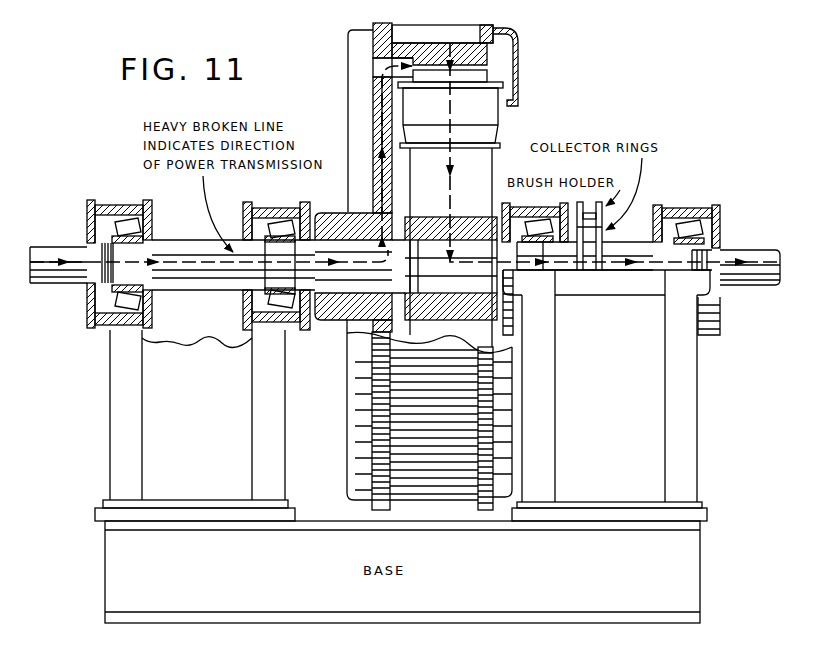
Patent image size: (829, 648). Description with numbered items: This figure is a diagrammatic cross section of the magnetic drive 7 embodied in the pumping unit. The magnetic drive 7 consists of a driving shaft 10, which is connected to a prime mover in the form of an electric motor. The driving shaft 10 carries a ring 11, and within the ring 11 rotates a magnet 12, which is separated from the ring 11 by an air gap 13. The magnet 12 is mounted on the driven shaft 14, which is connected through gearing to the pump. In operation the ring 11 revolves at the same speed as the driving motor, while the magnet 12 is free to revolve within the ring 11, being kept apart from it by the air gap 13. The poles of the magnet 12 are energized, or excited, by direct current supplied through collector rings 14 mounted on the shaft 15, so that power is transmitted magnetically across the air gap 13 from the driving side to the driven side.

The magnetic drive 7 is at (368, 114).
The driving shaft 10 is at (66, 242).
The ring 11 is at (466, 35).
The magnet 12 is at (475, 173).
The air gap 13 is at (487, 66).
The driven shaft 14 is at (592, 247).
The shaft 15 is at (758, 286).